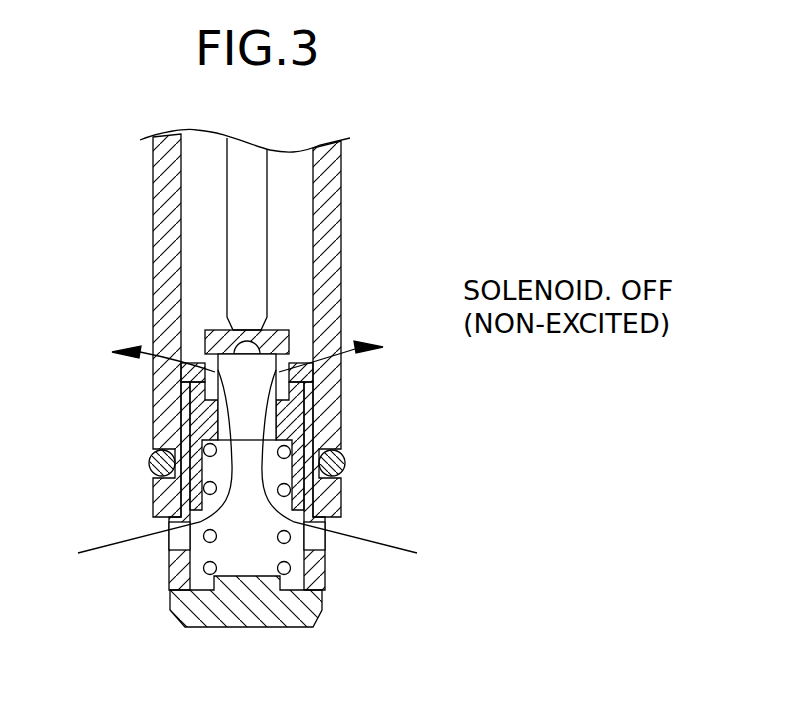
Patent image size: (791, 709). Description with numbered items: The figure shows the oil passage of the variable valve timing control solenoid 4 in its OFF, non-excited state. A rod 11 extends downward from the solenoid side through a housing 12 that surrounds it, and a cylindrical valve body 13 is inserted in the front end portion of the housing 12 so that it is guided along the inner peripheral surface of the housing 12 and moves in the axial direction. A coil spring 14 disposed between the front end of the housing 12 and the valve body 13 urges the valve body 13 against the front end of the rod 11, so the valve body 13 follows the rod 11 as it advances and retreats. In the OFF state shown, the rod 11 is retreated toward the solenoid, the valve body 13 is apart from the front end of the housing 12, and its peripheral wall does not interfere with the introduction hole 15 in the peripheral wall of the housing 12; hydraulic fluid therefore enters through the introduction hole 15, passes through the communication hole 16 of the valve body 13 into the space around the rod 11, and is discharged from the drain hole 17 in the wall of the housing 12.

The variable valve timing control solenoid 4 is at (242, 378).
The rod 11 is at (257, 228).
The housing 12 is at (328, 290).
The valve body 13 is at (207, 329).
The coil spring 14 is at (288, 570).
The introduction hole 15 is at (176, 543).
The communication hole 16 is at (183, 372).
The drain hole 17 is at (181, 346).